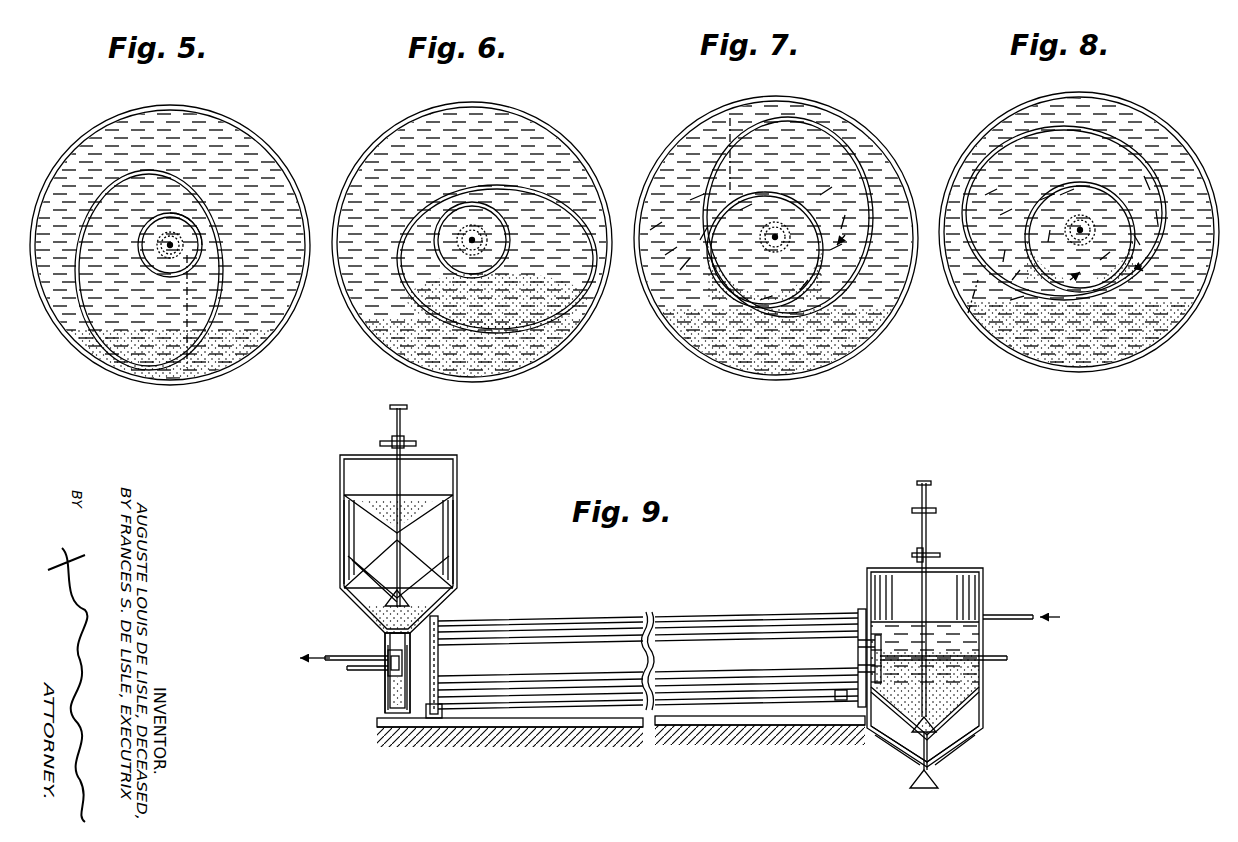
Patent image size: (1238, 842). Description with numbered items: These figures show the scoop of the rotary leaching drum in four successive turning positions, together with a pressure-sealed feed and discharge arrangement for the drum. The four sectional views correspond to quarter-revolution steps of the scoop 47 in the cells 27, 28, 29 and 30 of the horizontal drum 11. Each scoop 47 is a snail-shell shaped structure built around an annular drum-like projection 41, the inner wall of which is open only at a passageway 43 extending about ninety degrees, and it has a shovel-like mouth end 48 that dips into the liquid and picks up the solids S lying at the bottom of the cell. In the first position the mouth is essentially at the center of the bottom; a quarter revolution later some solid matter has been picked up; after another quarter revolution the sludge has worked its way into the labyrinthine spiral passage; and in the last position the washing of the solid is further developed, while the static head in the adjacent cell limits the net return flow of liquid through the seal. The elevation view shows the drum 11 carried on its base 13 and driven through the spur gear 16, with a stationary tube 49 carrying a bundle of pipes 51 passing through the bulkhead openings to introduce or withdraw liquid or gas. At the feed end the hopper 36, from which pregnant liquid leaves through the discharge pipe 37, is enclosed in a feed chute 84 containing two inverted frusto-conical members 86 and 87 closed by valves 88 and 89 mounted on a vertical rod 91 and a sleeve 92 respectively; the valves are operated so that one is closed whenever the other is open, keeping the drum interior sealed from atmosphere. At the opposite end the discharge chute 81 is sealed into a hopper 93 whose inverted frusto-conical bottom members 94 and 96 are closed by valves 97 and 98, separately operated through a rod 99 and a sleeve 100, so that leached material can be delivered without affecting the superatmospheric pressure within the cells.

In FIG. 5, the drum 11 is at (92, 126).
In FIG. 6, the drum 11 is at (400, 127).
In FIG. 7, the drum 11 is at (694, 127).
In FIG. 8, the drum 11 is at (980, 130).
In FIG. 9, the drum 11 is at (663, 611).
In FIG. 5, the cell 27 is at (178, 151).
In FIG. 6, the cell 28 is at (516, 151).
In FIG. 7, the cell 29 is at (889, 177).
In FIG. 8, the cell 30 is at (1160, 146).
In FIG. 5, the scoop 47 is at (190, 178).
In FIG. 8, the scoop 47 is at (1127, 145).
In FIG. 5, the passageway 43 is at (200, 262).
In FIG. 6, the passageway 43 is at (488, 205).
In FIG. 7, the passageway 43 is at (748, 186).
In FIG. 8, the passageway 43 is at (1022, 233).
In FIG. 5, the shovel-like mouth end 48 is at (222, 382).
In FIG. 6, the shovel-like mouth end 48 is at (553, 197).
In FIG. 7, the shovel-like mouth end 48 is at (730, 157).
In FIG. 8, the shovel-like mouth end 48 is at (968, 313).
In FIG. 8, the drum-like projection 41 is at (1126, 196).
In FIG. 5, the solids S is at (262, 342).
In FIG. 6, the solids S is at (560, 295).
In FIG. 7, the solids S is at (830, 270).
In FIG. 8, the solids S is at (1133, 262).
In FIG. 9, the vertical rod 91 is at (403, 407).
In FIG. 9, the sleeve 92 is at (402, 478).
In FIG. 9, the feed chute 84 is at (458, 478).
In FIG. 9, the inverted frusto-conical member 86 is at (360, 516).
In FIG. 9, the valve 89 is at (392, 542).
In FIG. 9, the inverted frusto-conical member 87 is at (362, 571).
In FIG. 9, the valve 88 is at (380, 602).
In FIG. 9, the discharge pipe 37 is at (340, 656).
In FIG. 9, the tube 49 is at (392, 662).
In FIG. 9, the pipes 51 is at (346, 668).
In FIG. 9, the hopper 36 is at (386, 695).
In FIG. 9, the spur gear 16 is at (440, 666).
In FIG. 9, the base 13 is at (567, 730).
In FIG. 9, the discharge chute 81 is at (858, 657).
In FIG. 9, the hopper 93 is at (880, 568).
In FIG. 9, the sleeve 100 is at (920, 530).
In FIG. 9, the rod 99 is at (928, 500).
In FIG. 9, the inverted frusto-conical bottom member 94 is at (966, 700).
In FIG. 9, the inverted frusto-conical bottom member 96 is at (978, 742).
In FIG. 9, the valve 97 is at (936, 738).
In FIG. 9, the valve 98 is at (940, 785).